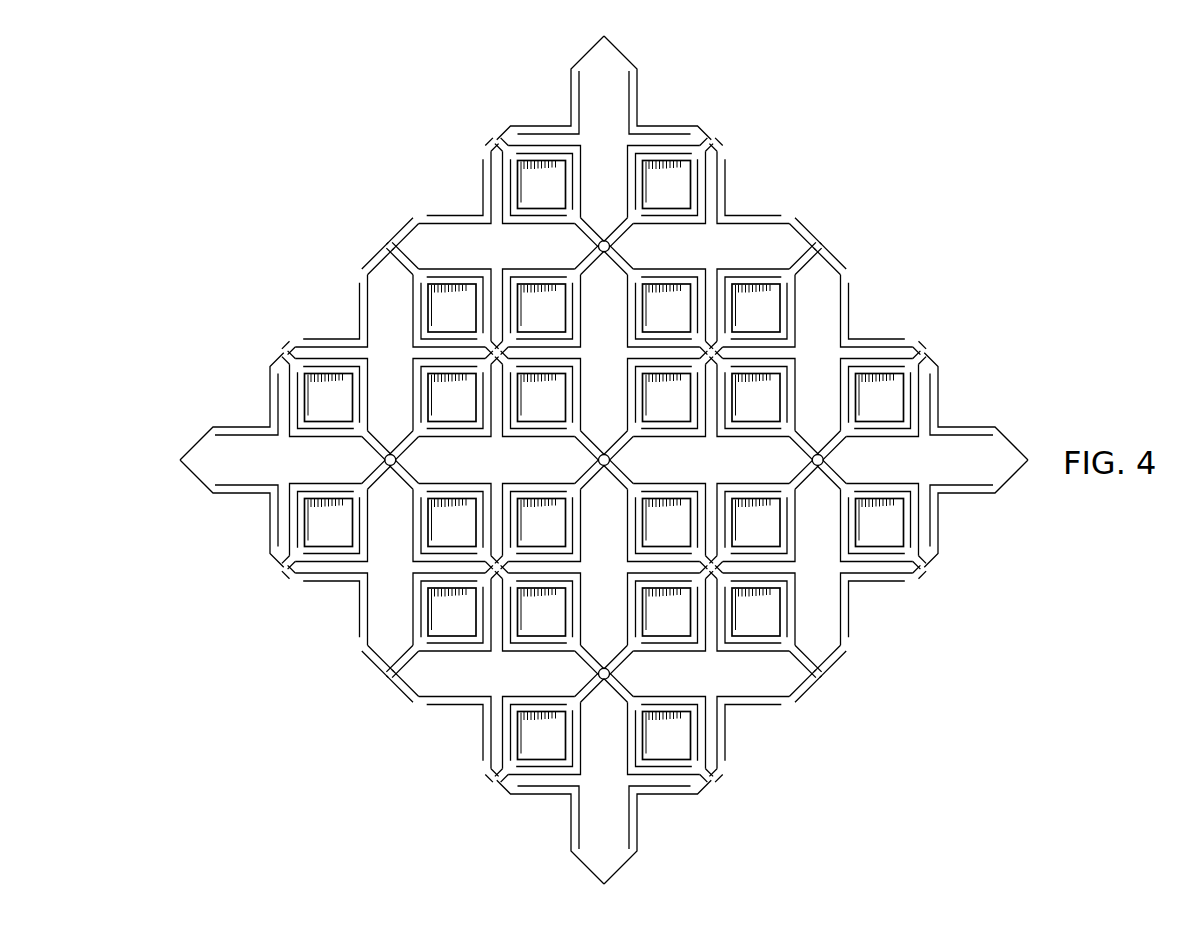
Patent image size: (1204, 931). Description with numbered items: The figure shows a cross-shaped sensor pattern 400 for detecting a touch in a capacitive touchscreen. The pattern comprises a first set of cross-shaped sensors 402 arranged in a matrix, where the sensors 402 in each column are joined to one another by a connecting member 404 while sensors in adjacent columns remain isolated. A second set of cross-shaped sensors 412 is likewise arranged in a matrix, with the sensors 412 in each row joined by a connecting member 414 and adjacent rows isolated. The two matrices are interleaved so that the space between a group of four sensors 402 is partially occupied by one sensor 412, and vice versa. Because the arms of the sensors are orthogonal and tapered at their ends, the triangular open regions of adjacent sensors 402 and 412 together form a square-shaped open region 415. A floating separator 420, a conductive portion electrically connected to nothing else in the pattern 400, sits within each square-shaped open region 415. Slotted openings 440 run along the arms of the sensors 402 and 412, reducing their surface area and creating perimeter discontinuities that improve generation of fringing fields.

The cross-shaped sensor pattern 400 is at (604, 460).
The cross-shaped sensor of the first set 402 is at (639, 95).
The connecting member 404 is at (611, 238).
The cross-shaped sensor of the second set 412 is at (239, 489).
The connecting member 414 is at (598, 247).
The square-shaped open region 415 is at (757, 285).
The floating separator 420 is at (683, 190).
The slotted opening 440 is at (848, 322).